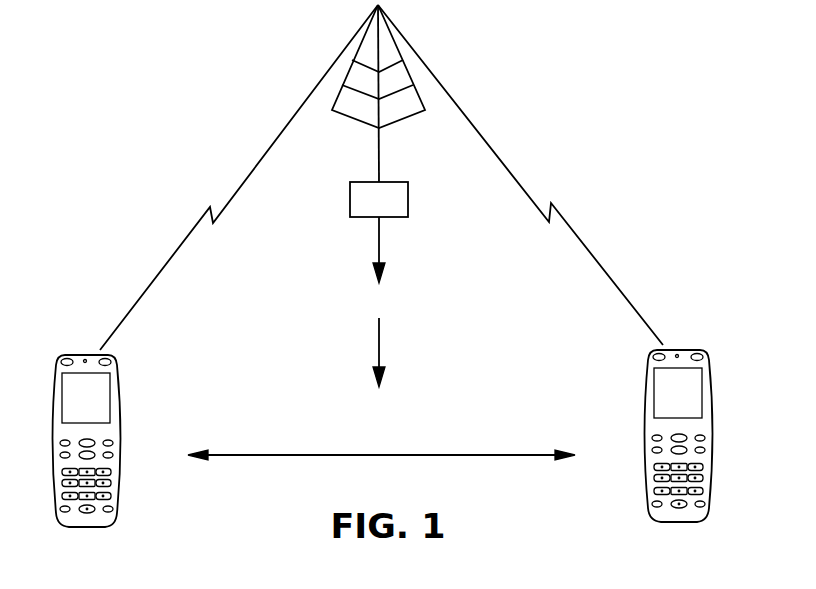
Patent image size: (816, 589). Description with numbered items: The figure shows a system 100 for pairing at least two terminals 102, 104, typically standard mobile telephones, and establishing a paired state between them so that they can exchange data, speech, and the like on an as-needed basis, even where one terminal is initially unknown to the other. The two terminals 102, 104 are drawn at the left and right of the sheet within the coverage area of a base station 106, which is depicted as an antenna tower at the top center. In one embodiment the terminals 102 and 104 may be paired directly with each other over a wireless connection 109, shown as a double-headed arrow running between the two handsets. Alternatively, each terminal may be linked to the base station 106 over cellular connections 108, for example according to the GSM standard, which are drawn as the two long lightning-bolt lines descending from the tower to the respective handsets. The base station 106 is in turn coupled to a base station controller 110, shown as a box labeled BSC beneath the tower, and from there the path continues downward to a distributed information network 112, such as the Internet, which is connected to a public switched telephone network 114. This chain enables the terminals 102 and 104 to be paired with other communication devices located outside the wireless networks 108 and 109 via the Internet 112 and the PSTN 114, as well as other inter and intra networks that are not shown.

The system 100 is at (610, 122).
The terminal 102 is at (77, 352).
The terminal 104 is at (703, 352).
The base station 106 is at (400, 28).
The cellular connections 108 is at (182, 240).
The wireless connection 109 is at (293, 455).
The base station controller 110 is at (408, 197).
The distributed information network 112 is at (425, 300).
The public switched telephone network 114 is at (403, 415).